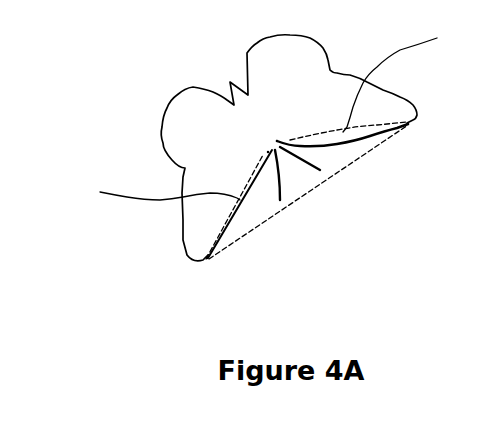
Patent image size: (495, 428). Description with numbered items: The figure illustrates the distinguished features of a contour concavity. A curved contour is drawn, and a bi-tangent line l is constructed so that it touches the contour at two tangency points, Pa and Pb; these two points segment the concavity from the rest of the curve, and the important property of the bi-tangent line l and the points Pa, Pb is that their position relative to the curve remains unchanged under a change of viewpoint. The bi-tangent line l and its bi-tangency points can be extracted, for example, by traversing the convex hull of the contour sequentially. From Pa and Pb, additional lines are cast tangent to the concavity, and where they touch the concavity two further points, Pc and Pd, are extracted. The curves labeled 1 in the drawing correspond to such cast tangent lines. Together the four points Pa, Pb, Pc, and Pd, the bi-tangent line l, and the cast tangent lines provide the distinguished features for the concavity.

The line 1 is at (465, 55).
The bi-tangent line l is at (308, 192).
The tangency point Pa is at (214, 273).
The tangency point Pb is at (421, 136).
The cast tangency point Pc is at (278, 129).
The cast tangency point Pd is at (253, 149).